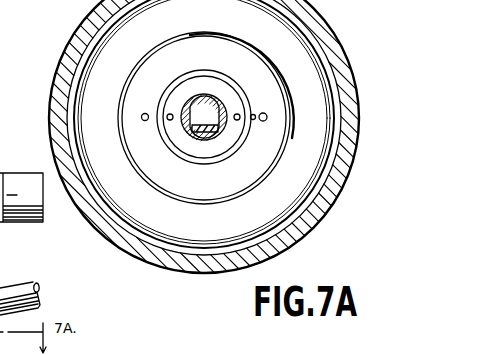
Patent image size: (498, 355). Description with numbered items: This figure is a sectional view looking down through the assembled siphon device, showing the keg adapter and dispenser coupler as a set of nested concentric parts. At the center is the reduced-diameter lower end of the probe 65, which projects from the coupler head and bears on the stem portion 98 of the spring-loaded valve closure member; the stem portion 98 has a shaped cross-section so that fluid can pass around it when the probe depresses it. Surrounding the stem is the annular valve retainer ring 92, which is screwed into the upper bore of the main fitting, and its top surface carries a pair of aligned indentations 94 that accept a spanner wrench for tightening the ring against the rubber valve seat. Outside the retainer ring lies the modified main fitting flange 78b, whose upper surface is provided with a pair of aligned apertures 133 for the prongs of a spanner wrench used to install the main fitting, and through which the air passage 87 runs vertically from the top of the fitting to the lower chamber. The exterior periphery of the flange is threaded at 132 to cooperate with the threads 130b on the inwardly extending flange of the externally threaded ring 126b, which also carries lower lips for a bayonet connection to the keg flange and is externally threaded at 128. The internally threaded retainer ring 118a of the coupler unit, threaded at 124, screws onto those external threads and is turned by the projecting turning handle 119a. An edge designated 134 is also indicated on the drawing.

The threads 132 is at (143, 53).
The threads 130b is at (162, 103).
The aligned apertures 133 is at (265, 121).
The aligned indentations 94 is at (239, 114).
The lower end of the probe 65 is at (193, 133).
The valve retainer ring 92 is at (198, 147).
The stem portion 98 is at (208, 114).
The rim edge 134 is at (250, 65).
The air passage 87 is at (254, 120).
The main fitting flange 78b is at (236, 173).
The retainer ring 118a is at (153, 261).
The threaded portion 124 is at (204, 155).
The external threads 128 is at (213, 268).
The externally threaded ring 126b is at (318, 221).
The turning handle 119a is at (12, 294).